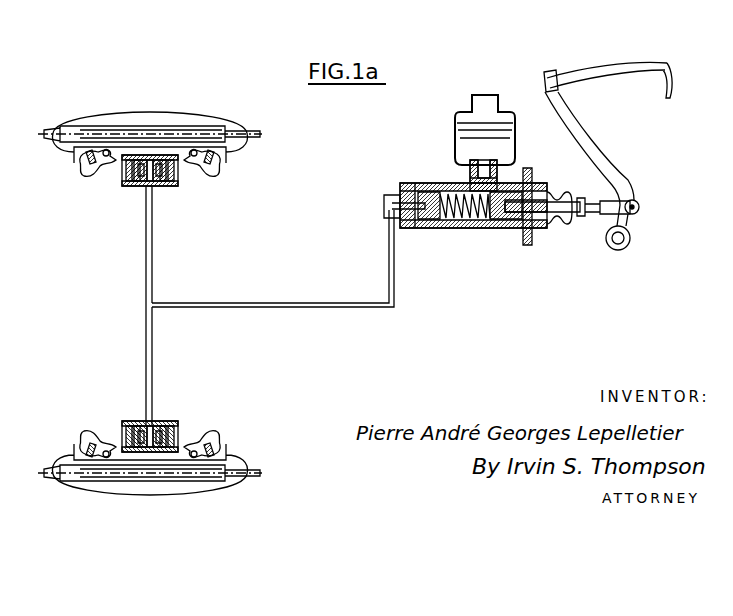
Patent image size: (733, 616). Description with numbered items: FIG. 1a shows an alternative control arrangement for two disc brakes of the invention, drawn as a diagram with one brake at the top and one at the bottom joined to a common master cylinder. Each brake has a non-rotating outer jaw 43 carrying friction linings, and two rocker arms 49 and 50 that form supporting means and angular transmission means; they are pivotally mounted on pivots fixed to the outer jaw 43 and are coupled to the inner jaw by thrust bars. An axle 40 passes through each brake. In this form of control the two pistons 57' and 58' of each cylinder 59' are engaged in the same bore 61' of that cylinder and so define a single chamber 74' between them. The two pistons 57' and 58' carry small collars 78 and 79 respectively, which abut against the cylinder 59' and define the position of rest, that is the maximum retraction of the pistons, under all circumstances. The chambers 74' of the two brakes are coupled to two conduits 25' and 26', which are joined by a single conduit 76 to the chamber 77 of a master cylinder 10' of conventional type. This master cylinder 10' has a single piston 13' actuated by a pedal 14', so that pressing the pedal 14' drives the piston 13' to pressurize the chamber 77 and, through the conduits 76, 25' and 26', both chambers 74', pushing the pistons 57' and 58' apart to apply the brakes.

The master cylinder 10' is at (478, 170).
The piston 13' is at (535, 229).
The pedal 14' is at (608, 138).
The conduit 25' is at (171, 244).
The conduit 26' is at (170, 364).
The axle 40 is at (56, 134).
The outer jaw 43 is at (106, 114).
The rocker arm 49 is at (88, 172).
The rocker arm 50 is at (204, 170).
The piston 57' is at (134, 303).
The piston 58' is at (186, 303).
The cylinder 59' is at (165, 303).
The bore 61' is at (140, 304).
The chamber 74' is at (178, 304).
The conduit 76 is at (306, 302).
The chamber 77 is at (455, 222).
The small collar 78 is at (130, 182).
The small collar 79 is at (172, 184).